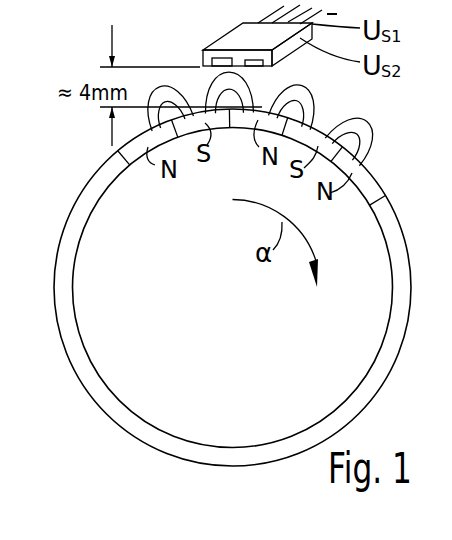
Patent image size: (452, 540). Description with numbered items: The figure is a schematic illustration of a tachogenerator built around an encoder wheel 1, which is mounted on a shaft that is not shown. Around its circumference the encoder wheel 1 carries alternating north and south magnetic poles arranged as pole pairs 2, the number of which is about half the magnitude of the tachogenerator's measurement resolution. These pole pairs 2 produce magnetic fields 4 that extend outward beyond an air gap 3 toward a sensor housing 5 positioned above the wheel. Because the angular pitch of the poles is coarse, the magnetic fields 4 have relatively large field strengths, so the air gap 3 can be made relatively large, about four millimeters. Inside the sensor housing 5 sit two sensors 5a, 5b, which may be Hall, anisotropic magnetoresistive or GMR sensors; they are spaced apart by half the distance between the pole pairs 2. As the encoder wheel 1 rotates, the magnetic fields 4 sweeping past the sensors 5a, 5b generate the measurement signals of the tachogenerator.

The encoder wheel 1 is at (88, 337).
The pole pairs 2 is at (114, 151).
The air gap 3 is at (256, 76).
The magnetic fields 4 is at (372, 132).
The sensor housing 5 is at (248, 41).
The sensor 5a is at (220, 58).
The sensor 5b is at (262, 66).